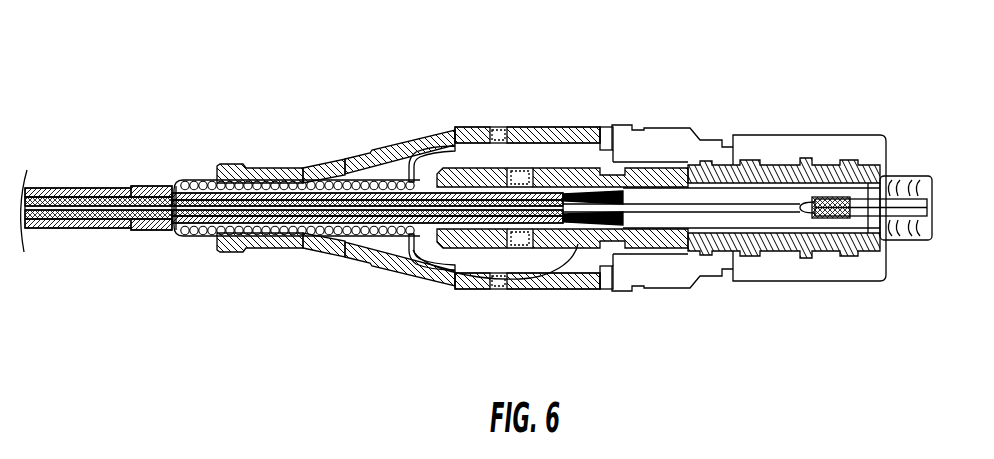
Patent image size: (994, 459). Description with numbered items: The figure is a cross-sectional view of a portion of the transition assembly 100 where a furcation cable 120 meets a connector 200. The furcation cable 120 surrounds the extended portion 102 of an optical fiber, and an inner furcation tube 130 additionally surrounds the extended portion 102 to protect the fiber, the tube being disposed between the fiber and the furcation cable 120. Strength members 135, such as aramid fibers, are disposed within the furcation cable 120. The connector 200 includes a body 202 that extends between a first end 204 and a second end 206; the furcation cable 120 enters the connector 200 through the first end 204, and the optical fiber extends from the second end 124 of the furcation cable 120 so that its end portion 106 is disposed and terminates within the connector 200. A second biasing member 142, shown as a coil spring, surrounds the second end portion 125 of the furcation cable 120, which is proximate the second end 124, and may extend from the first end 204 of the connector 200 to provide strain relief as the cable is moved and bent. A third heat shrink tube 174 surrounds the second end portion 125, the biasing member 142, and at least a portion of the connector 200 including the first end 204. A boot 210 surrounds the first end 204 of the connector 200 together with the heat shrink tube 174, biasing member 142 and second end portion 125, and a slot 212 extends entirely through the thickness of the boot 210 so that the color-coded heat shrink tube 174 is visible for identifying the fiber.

The assembly 100 is at (220, 64).
The furcation cable 120 is at (70, 232).
The inner furcation tube 130 is at (66, 188).
The third heat shrink tube 174 is at (198, 177).
The extended portion 102 is at (181, 238).
The second biasing member 142 is at (258, 253).
The second end portion 125 is at (343, 249).
The boot 210 is at (407, 145).
The first end 204 is at (404, 244).
The slot 212 is at (500, 126).
The second end 124 is at (573, 260).
The strength members 135 is at (567, 240).
The body 202 is at (612, 125).
The end portion 106 is at (736, 208).
The connector 200 is at (786, 135).
The second end 206 is at (928, 173).